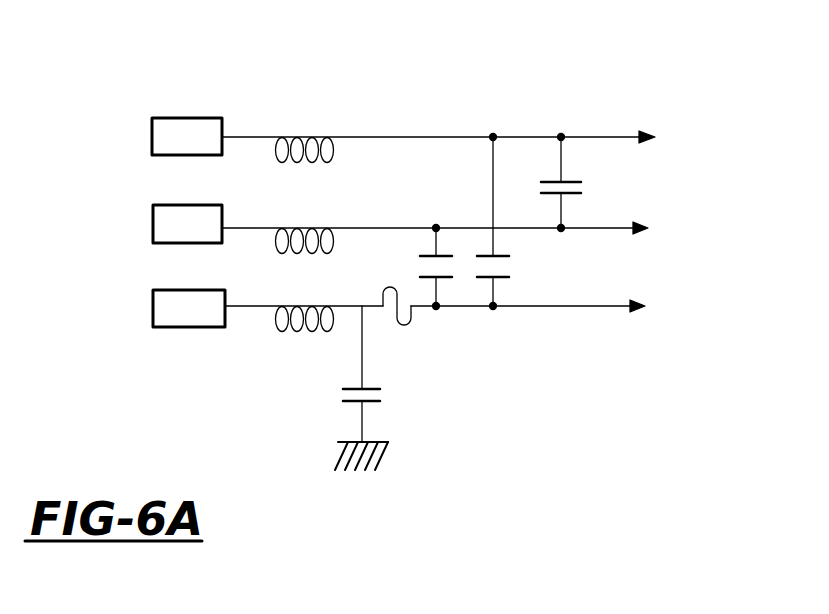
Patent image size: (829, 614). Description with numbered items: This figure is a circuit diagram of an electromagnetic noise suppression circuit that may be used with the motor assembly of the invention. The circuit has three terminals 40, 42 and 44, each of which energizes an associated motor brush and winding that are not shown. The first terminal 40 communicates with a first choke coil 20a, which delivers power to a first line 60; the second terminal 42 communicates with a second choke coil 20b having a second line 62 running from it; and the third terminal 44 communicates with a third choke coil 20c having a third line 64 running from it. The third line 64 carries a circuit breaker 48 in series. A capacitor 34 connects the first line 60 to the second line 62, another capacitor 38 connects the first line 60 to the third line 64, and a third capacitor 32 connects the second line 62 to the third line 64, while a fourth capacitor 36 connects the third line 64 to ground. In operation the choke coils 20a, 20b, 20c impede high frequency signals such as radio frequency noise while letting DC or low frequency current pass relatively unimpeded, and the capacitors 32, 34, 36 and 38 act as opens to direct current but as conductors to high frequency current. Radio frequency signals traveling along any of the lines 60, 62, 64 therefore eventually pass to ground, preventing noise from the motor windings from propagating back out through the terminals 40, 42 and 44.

The first terminal 40 is at (168, 123).
The second terminal 42 is at (163, 230).
The third terminal 44 is at (163, 312).
The first choke coil 20a is at (338, 137).
The second choke coil 20b is at (270, 227).
The third choke coil 20c is at (278, 325).
The third capacitor 32 is at (443, 254).
The capacitor 34 is at (583, 190).
The fourth capacitor 36 is at (383, 393).
The capacitor 38 is at (507, 277).
The circuit breaker 48 is at (420, 321).
The first line 60 is at (482, 137).
The second line 62 is at (403, 228).
The third line 64 is at (585, 308).